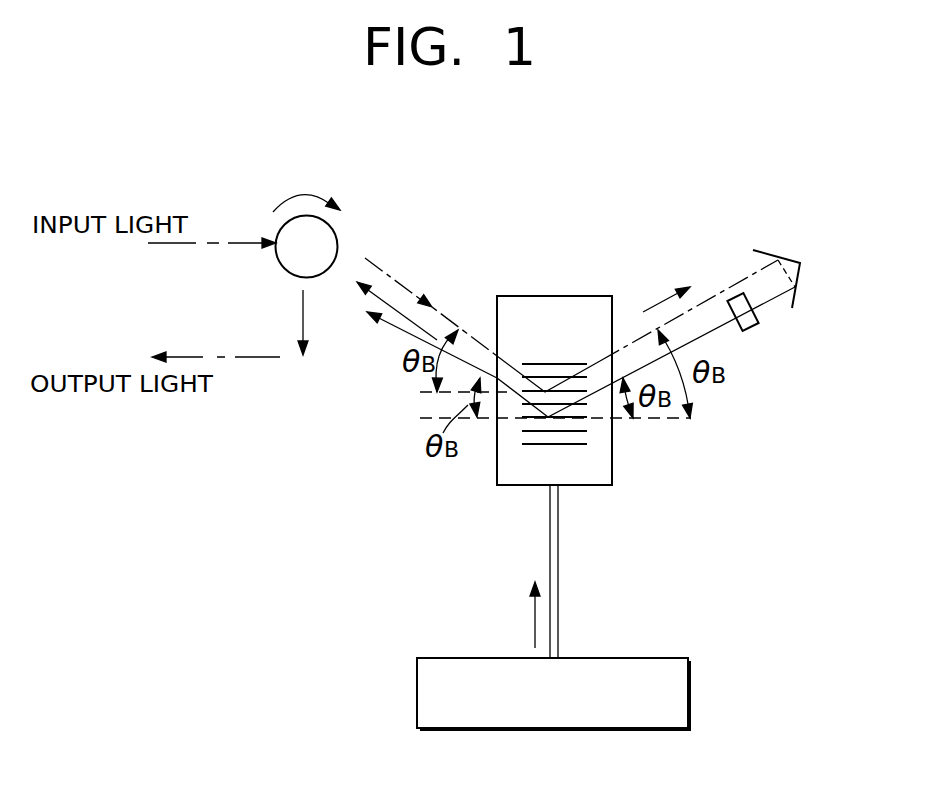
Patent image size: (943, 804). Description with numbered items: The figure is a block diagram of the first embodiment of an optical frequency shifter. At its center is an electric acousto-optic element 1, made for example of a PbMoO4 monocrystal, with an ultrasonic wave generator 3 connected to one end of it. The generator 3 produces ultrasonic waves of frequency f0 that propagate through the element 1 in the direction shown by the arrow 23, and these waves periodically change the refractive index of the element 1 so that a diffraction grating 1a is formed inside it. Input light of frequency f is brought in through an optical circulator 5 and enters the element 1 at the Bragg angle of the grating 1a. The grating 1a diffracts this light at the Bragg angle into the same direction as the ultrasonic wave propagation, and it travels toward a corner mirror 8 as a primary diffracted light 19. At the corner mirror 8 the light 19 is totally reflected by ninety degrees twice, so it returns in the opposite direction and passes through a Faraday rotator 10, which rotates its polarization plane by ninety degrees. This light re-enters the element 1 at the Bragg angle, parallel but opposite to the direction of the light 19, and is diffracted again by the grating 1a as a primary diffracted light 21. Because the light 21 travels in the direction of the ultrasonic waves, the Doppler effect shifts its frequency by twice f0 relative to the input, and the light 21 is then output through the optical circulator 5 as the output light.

The electric acousto-optic element 1 is at (612, 467).
The diffraction grating 1a is at (585, 432).
The ultrasonic wave generator 3 is at (417, 692).
The optical circulator 5 is at (277, 232).
The corner mirror 8 is at (788, 250).
The Faraday rotator 10 is at (753, 328).
The primary diffracted light 19 is at (660, 303).
The primary diffracted light 21 is at (393, 336).
The arrow 23 is at (533, 617).